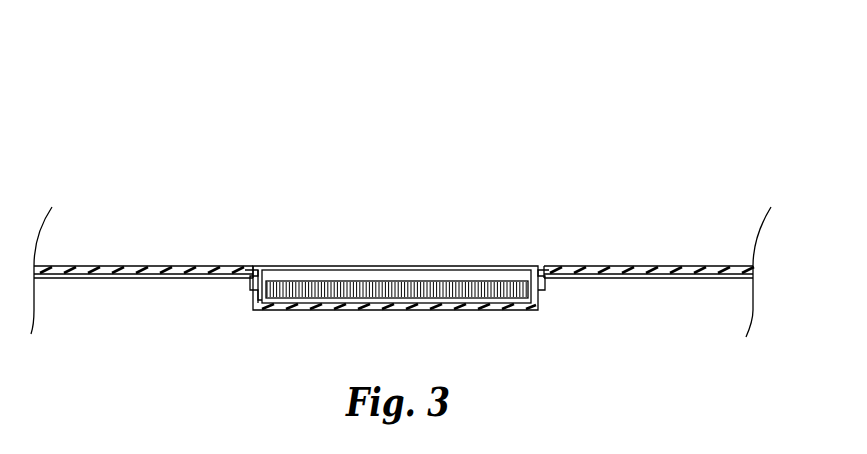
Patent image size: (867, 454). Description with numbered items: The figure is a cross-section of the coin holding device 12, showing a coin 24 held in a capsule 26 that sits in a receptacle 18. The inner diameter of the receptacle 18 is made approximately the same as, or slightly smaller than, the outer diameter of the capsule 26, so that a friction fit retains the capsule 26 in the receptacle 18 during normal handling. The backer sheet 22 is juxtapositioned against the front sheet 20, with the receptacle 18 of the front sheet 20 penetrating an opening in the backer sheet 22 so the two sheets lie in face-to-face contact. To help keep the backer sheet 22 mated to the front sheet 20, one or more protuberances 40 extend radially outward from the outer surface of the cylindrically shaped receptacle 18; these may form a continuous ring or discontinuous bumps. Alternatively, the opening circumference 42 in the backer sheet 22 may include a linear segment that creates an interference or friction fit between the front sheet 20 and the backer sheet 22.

The coin holding device 12 is at (645, 91).
The receptacle 18 is at (253, 292).
The front sheet 20 is at (642, 265).
The backer sheet 22 is at (695, 279).
The coin 24 is at (455, 290).
The capsule 26 is at (341, 268).
The protuberance 40 is at (250, 284).
The opening circumference 42 is at (258, 266).